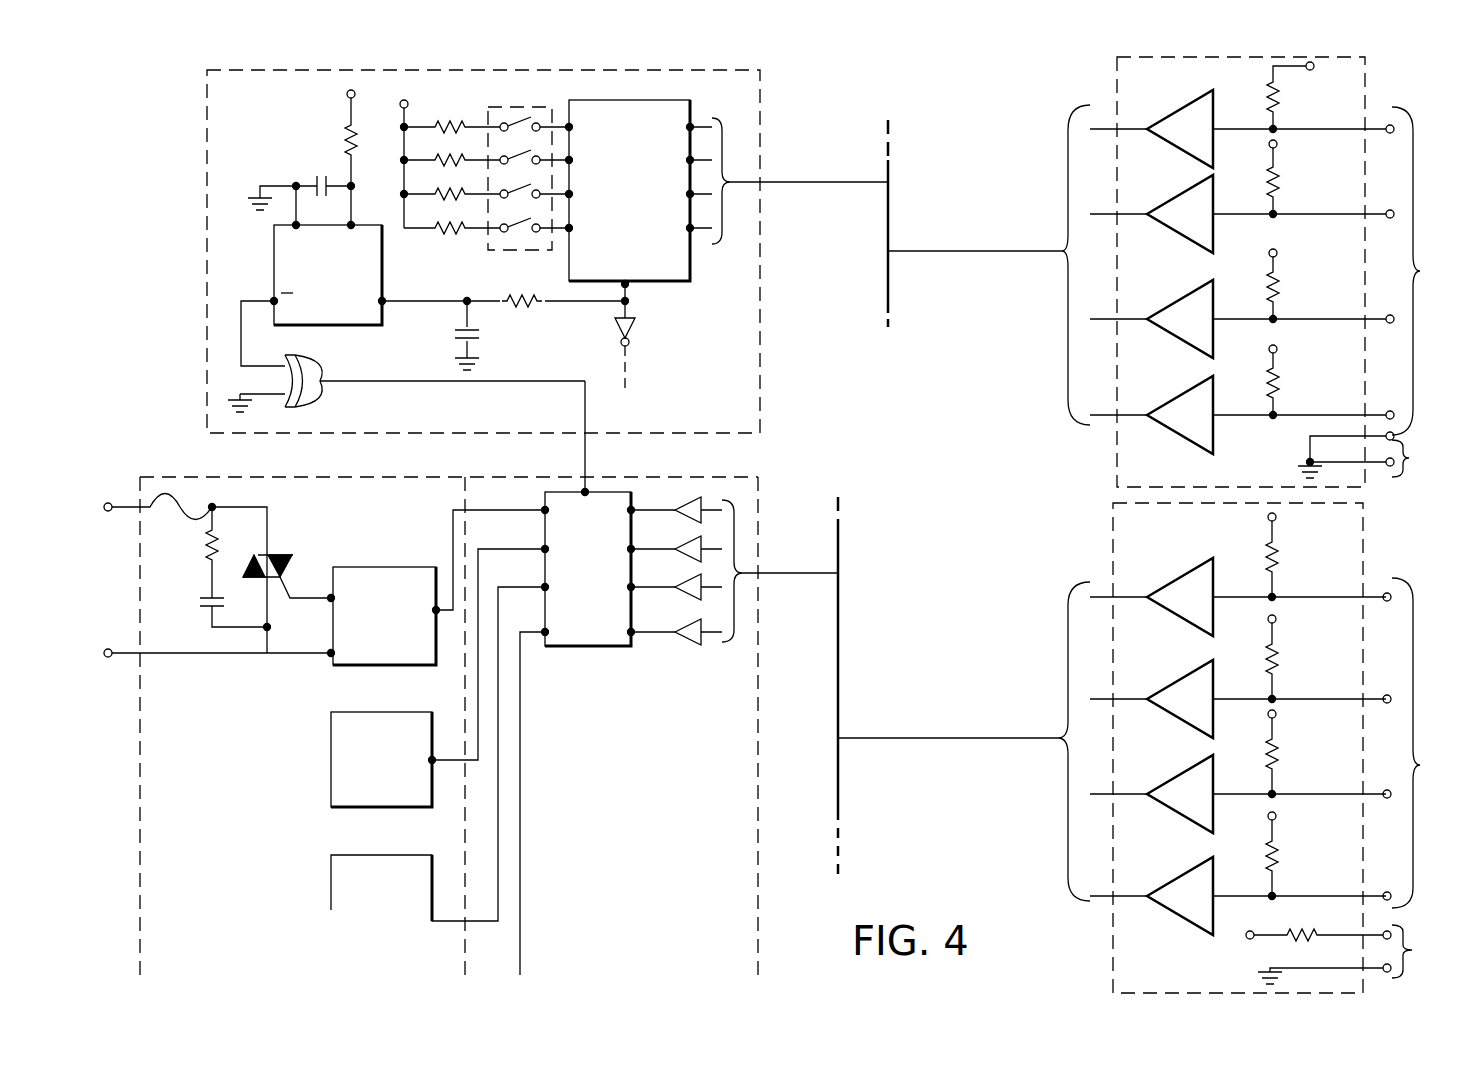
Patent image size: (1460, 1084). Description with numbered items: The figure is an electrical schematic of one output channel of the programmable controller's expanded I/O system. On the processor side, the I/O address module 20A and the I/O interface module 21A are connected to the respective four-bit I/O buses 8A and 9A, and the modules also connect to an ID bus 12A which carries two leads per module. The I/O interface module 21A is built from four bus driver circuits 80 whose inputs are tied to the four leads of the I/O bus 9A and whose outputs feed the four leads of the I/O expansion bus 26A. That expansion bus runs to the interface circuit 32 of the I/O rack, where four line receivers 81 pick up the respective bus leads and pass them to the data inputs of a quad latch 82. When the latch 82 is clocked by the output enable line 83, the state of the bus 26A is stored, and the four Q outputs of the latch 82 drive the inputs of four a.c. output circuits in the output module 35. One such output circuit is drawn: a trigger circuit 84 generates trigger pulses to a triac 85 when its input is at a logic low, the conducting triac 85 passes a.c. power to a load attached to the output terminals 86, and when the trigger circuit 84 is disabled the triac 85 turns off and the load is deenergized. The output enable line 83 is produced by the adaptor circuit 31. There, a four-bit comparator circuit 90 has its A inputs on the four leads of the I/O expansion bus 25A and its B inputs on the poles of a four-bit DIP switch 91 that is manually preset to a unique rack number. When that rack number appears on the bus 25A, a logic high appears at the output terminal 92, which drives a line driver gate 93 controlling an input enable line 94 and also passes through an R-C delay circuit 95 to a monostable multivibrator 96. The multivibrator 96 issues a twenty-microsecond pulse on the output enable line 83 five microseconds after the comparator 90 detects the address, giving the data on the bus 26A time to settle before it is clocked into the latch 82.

The adaptor circuit 31 is at (760, 365).
The interface circuit 32 is at (758, 513).
The output module 35 is at (365, 477).
The monostable multivibrator 96 is at (342, 273).
The R-C delay circuit 95 is at (500, 315).
The 4-bit DIP switch 91 is at (505, 250).
The 4-bit comparator circuit 90 is at (690, 281).
The output terminal 92 is at (630, 287).
The line driver gate 93 is at (632, 334).
The input enable line 94 is at (628, 358).
The I/O expansion bus 25A is at (890, 172).
The I/O expansion bus 26A is at (840, 628).
The I/O address module 20A is at (1365, 92).
The I/O interface module 21A is at (1234, 748).
The I/O bus 8A is at (1418, 271).
The I/O bus 9A is at (1413, 743).
The ID bus 12A is at (1419, 709).
The bus driver circuit 80 is at (1192, 565).
The line receiver 81 is at (690, 504).
The quad latch 82 is at (590, 648).
The output enable line 83 is at (587, 455).
The trigger circuit 84 is at (425, 567).
The triac 85 is at (278, 553).
The output terminals 86 is at (112, 510).